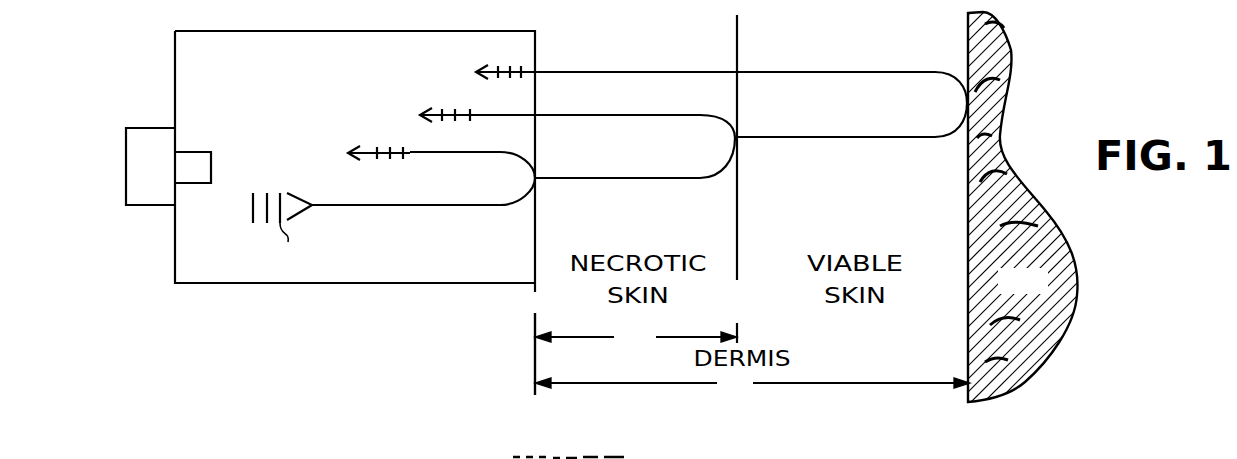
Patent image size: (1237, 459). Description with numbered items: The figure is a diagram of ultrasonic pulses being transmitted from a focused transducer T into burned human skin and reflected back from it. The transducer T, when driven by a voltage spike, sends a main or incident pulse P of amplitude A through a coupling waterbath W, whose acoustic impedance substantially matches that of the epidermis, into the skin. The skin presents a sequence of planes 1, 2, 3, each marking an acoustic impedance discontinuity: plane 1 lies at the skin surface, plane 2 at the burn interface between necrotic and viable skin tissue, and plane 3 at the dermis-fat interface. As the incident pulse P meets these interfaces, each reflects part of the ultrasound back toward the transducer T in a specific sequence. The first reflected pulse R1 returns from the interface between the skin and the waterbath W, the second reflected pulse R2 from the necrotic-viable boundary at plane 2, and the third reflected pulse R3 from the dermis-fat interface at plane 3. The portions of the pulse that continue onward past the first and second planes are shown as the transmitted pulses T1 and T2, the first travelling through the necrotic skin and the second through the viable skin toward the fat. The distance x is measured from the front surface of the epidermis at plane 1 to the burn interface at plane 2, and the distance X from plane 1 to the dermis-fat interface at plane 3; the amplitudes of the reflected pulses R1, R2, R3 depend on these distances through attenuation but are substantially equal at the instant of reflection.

The transducer T is at (126, 165).
The waterbath W is at (253, 223).
The main pulse P is at (433, 204).
The first reflected pulse R1 is at (361, 157).
The second reflected pulse R2 is at (431, 121).
The third reflected pulse R3 is at (486, 79).
The first transmitted wave T1 is at (606, 169).
The second transmitted wave T2 is at (751, 126).
The plane at skin surface 1 is at (535, 325).
The plane at burn interface 2 is at (740, 327).
The plane at dermis-fat interface 3 is at (968, 315).
The distance to burn interface x is at (636, 336).
The distance to dermis-fat interface X is at (752, 384).